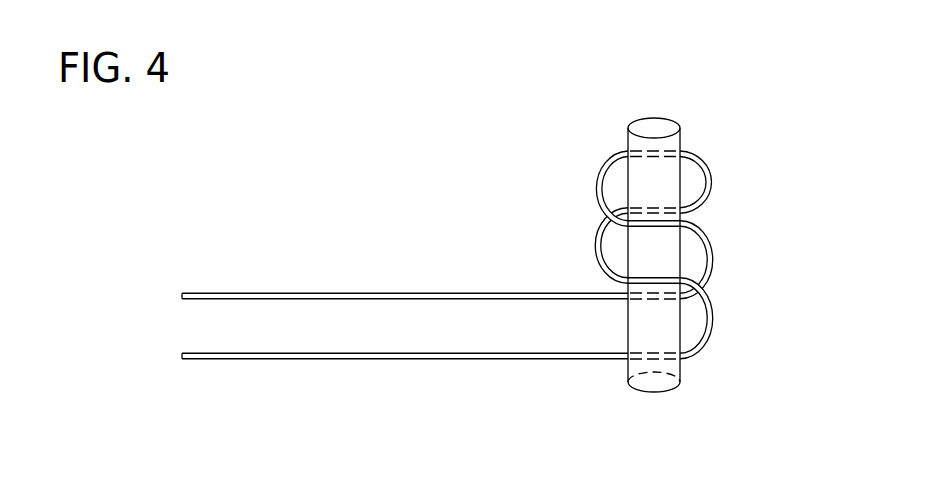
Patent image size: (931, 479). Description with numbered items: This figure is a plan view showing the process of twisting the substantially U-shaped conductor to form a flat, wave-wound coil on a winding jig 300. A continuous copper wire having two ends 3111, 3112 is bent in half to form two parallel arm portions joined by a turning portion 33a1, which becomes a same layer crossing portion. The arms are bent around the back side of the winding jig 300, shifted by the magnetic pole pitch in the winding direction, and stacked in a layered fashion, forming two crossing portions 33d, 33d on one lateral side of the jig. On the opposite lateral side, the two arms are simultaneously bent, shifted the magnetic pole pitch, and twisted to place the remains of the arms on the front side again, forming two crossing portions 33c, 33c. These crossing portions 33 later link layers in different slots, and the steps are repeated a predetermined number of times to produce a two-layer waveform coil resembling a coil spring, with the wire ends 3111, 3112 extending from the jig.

The winding jig 300 is at (657, 124).
The crossing portions 33 is at (654, 253).
The turning portion 33a1 is at (713, 183).
The crossing portions 33c is at (713, 250).
The crossing portions 33d is at (597, 182).
The end of continuous wire 3111 is at (185, 296).
The end of continuous wire 3112 is at (185, 356).